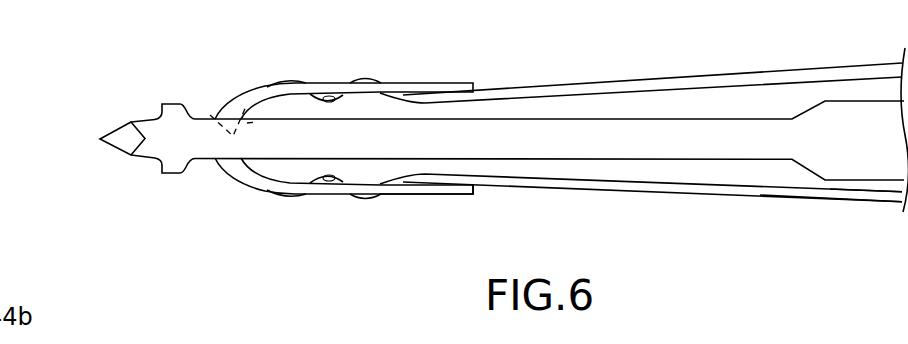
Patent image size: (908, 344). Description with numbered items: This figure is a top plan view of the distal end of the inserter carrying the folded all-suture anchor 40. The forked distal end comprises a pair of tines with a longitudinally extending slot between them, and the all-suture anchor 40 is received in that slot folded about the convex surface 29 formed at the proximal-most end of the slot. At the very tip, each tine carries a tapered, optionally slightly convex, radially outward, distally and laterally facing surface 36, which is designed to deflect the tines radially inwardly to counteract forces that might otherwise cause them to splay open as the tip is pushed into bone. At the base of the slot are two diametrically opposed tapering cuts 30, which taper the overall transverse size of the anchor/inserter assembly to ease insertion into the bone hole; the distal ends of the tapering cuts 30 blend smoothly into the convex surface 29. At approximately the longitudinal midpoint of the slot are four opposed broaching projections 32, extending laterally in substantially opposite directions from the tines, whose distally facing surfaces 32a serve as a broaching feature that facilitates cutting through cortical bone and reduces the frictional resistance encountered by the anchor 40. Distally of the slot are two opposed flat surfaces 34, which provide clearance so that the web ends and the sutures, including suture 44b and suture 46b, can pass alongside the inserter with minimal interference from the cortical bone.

The convex surface 29 is at (210, 115).
The tapering cuts 30 is at (249, 93).
The broaching projections 32 is at (163, 103).
The distally facing surfaces 32a is at (160, 105).
The flat surfaces 34 is at (740, 120).
The tapered surface 36 is at (118, 142).
The all-suture anchor 40 is at (447, 194).
The suture 44b is at (872, 194).
The suture 46b is at (828, 200).